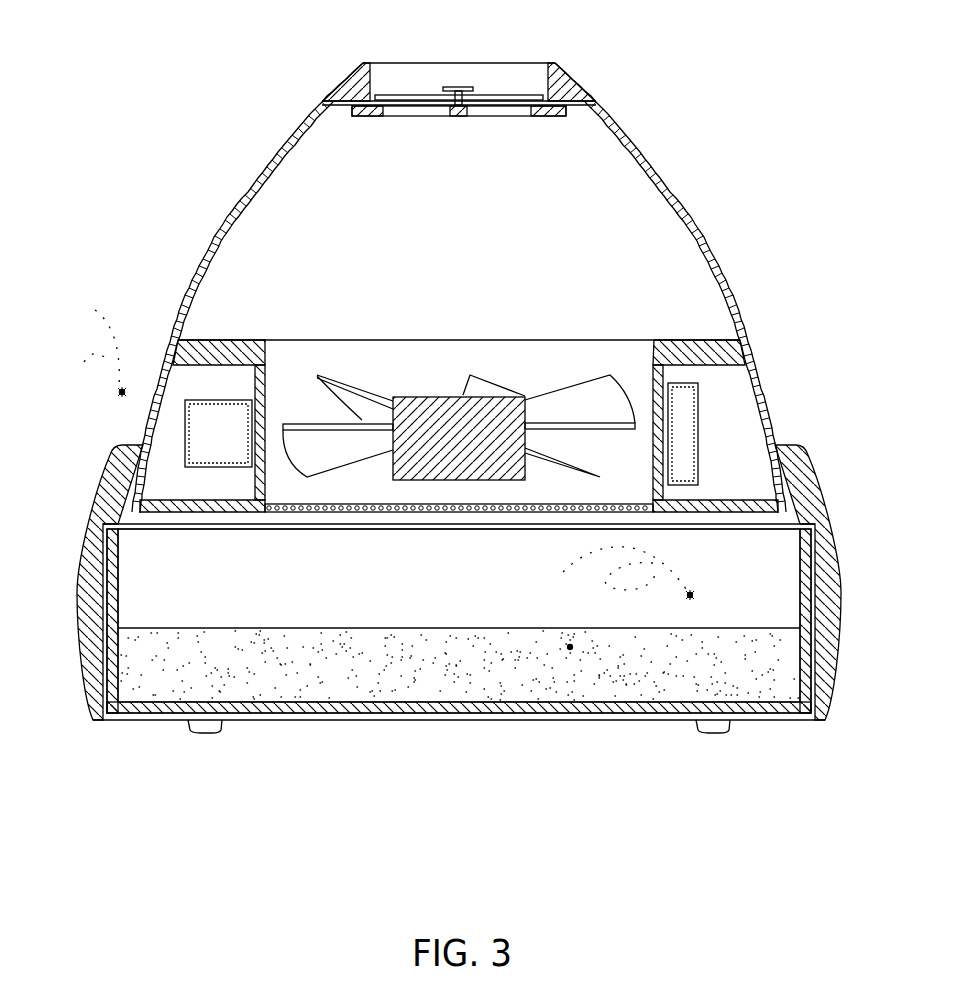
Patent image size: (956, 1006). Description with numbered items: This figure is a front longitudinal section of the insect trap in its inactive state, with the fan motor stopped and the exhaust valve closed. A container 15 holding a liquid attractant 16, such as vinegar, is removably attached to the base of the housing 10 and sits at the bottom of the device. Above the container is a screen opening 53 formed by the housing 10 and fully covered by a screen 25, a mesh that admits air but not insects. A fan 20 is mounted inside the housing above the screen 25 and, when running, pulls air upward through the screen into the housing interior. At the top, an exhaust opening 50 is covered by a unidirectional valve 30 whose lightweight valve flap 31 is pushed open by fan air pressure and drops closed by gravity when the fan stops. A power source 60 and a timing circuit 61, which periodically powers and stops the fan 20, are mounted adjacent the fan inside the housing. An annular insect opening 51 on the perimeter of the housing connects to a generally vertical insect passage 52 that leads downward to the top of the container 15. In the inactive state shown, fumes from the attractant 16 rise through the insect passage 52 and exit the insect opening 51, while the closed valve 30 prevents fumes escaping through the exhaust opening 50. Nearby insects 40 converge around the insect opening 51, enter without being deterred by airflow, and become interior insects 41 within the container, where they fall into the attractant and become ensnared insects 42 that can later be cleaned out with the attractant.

The housing 10 is at (656, 181).
The container 15 is at (470, 702).
The attractant 16 is at (353, 628).
The fan 20 is at (515, 395).
The screen 25 is at (433, 512).
The valve 30 is at (457, 118).
The valve flap 31 is at (420, 97).
The nearby insects 40 is at (118, 396).
The interior insects 41 is at (694, 593).
The ensnared insects 42 is at (573, 650).
The exhaust opening 50 is at (455, 109).
The insect opening 51 is at (792, 418).
The insect passage 52 is at (116, 494).
The screen opening 53 is at (276, 541).
The power source 60 is at (677, 387).
The timing circuit 61 is at (213, 403).